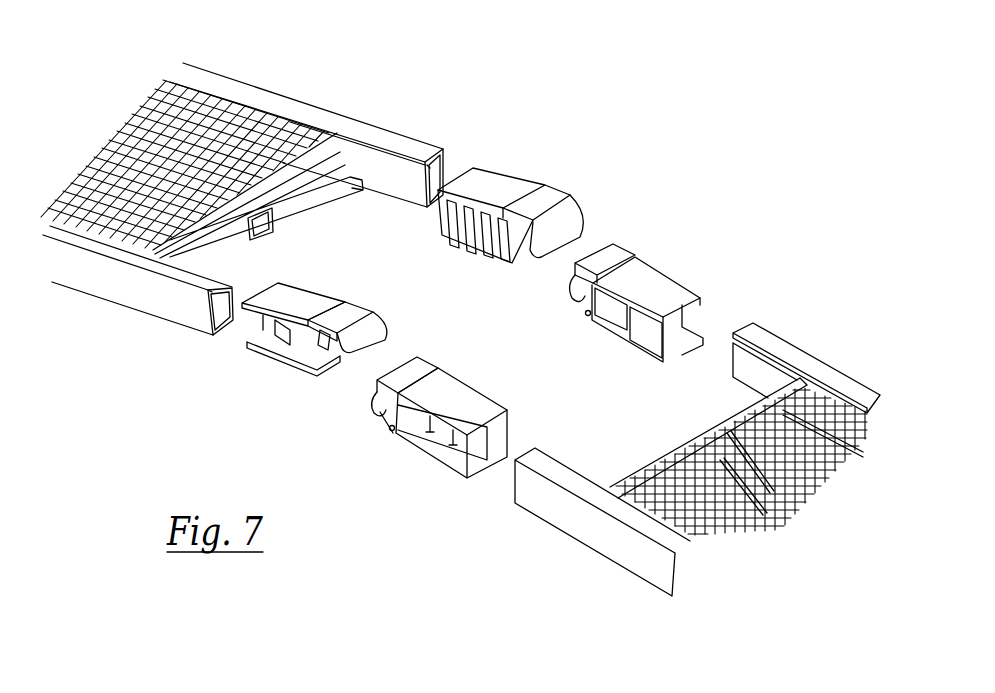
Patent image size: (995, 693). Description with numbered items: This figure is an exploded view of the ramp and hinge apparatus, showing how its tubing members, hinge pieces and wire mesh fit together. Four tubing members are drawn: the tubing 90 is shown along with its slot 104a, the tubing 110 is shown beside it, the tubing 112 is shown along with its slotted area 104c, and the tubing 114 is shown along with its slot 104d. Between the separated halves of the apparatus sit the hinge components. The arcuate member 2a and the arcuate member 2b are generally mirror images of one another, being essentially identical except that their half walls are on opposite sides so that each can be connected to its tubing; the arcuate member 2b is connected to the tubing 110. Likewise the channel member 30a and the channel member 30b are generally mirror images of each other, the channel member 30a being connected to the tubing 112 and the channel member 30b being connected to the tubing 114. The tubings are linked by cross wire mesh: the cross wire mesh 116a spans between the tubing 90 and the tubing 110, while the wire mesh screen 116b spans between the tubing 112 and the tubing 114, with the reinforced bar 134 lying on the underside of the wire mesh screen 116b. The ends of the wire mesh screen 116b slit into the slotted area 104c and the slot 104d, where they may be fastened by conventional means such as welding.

The wire mesh screen 116b is at (198, 157).
The tubing 112 is at (317, 115).
The slotted area 104c is at (445, 162).
The channel member 30a is at (500, 183).
The arcuate member 2a is at (630, 277).
The tubing 90 is at (780, 347).
The reinforced bar 134 is at (275, 220).
The slot 104d is at (222, 278).
The tubing 114 is at (110, 277).
The channel member 30b is at (297, 325).
The arcuate member 2b is at (450, 407).
The cross wire mesh 116a is at (700, 480).
The slot 104a is at (740, 347).
The tubing 110 is at (547, 502).